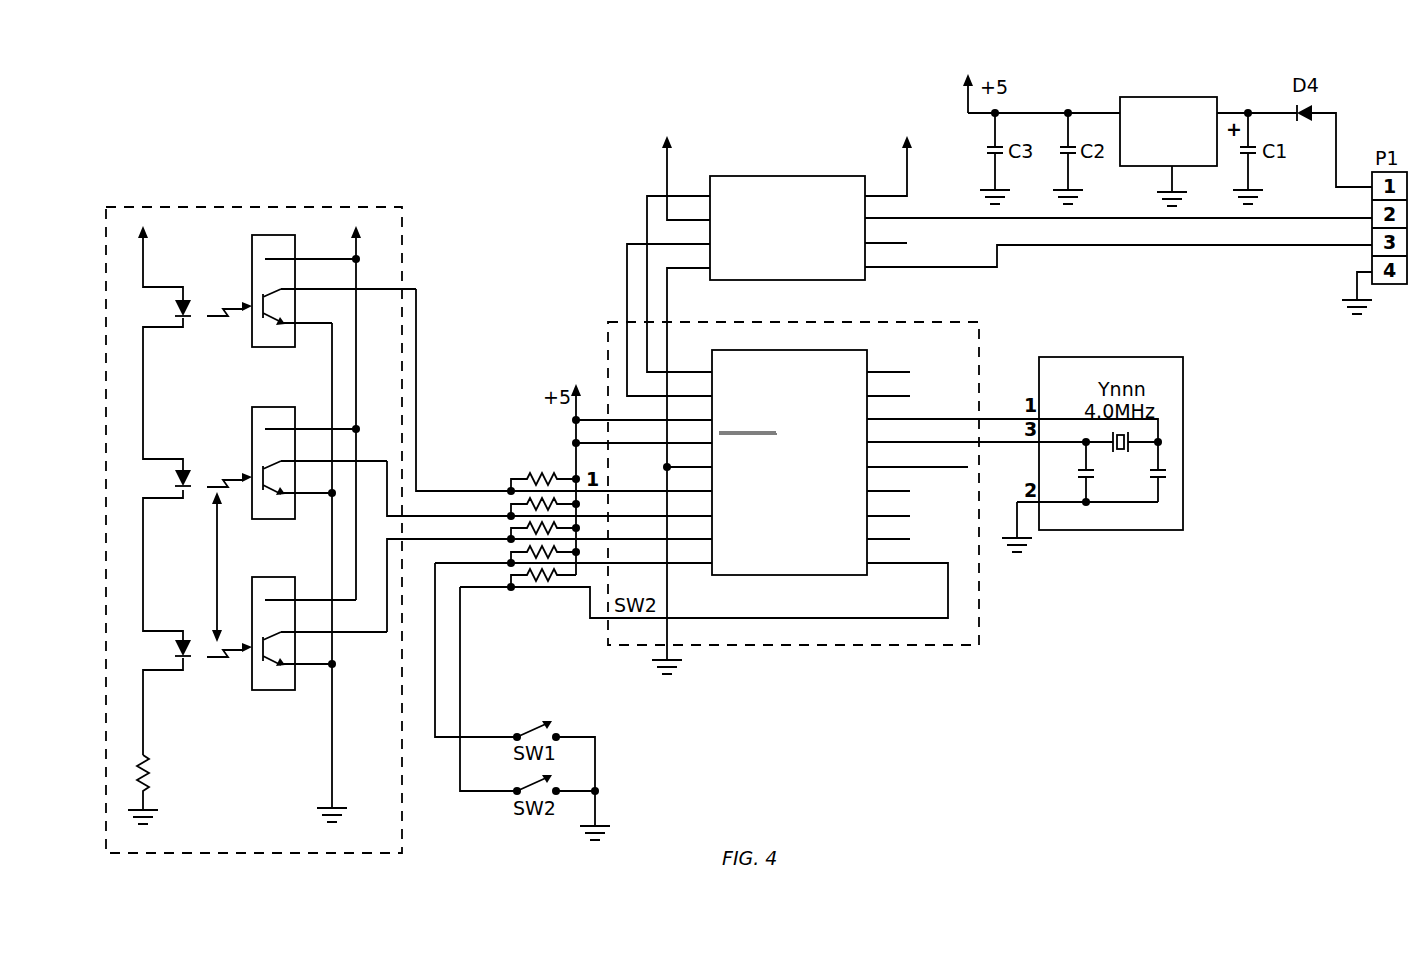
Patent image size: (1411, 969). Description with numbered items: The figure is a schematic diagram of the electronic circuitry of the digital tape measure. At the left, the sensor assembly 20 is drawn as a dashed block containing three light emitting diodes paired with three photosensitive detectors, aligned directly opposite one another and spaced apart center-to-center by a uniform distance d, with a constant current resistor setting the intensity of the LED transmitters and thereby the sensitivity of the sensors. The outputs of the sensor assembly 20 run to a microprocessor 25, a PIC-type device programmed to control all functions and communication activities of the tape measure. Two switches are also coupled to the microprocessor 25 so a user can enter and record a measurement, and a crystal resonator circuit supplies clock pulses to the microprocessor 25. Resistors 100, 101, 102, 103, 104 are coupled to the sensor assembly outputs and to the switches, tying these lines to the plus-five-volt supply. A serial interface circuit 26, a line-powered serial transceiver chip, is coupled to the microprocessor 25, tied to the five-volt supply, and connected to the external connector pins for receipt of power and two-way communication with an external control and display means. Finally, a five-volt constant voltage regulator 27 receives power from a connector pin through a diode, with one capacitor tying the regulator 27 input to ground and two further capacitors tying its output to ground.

The sensor assembly 20 is at (249, 208).
The microprocessor 25 is at (855, 646).
The serial interface circuit 26 is at (765, 144).
The constant voltage regulator 27 is at (1168, 72).
The resistor 100 is at (523, 484).
The resistor 101 is at (523, 509).
The resistor 102 is at (523, 533).
The resistor 103 is at (523, 557).
The resistor 104 is at (521, 580).